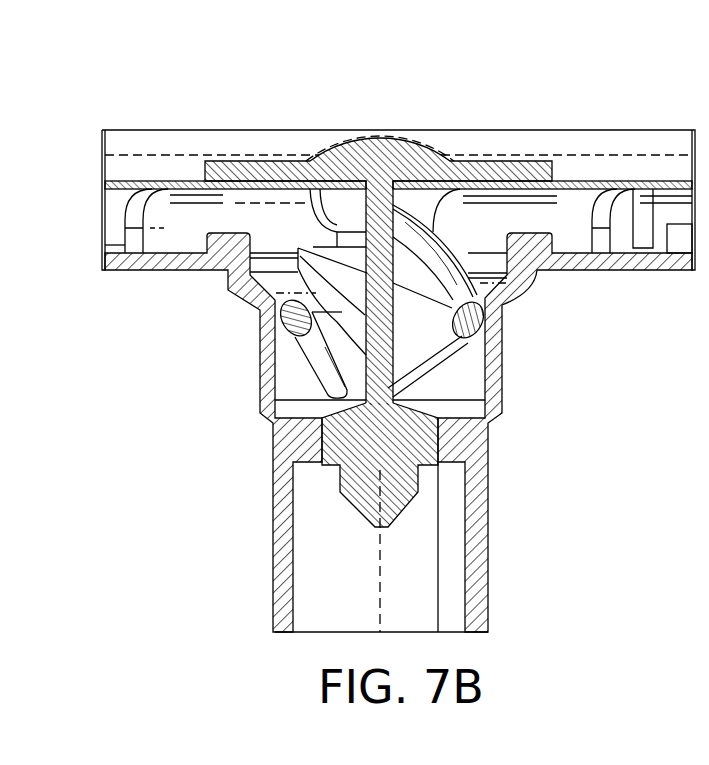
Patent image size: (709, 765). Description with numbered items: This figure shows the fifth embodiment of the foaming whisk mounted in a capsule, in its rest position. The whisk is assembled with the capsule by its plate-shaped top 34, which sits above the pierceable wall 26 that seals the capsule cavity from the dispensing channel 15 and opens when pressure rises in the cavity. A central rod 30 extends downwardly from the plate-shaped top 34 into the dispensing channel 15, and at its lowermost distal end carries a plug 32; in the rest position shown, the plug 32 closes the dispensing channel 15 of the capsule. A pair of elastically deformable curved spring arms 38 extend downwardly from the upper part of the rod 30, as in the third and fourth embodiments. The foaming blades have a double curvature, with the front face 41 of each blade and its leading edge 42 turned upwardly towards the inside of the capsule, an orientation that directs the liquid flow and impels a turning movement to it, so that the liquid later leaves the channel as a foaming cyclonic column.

The dispensing channel 15 is at (286, 532).
The pierceable wall 26 is at (600, 155).
The rod 30 is at (364, 356).
The plug 32 is at (398, 467).
The plate-shaped top 34 is at (405, 150).
The spring arms 38 is at (305, 370).
The front face 41 is at (408, 330).
The leading edge 42 is at (338, 231).